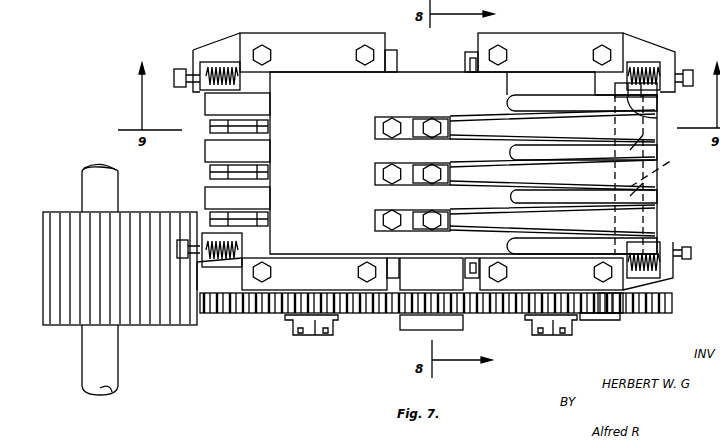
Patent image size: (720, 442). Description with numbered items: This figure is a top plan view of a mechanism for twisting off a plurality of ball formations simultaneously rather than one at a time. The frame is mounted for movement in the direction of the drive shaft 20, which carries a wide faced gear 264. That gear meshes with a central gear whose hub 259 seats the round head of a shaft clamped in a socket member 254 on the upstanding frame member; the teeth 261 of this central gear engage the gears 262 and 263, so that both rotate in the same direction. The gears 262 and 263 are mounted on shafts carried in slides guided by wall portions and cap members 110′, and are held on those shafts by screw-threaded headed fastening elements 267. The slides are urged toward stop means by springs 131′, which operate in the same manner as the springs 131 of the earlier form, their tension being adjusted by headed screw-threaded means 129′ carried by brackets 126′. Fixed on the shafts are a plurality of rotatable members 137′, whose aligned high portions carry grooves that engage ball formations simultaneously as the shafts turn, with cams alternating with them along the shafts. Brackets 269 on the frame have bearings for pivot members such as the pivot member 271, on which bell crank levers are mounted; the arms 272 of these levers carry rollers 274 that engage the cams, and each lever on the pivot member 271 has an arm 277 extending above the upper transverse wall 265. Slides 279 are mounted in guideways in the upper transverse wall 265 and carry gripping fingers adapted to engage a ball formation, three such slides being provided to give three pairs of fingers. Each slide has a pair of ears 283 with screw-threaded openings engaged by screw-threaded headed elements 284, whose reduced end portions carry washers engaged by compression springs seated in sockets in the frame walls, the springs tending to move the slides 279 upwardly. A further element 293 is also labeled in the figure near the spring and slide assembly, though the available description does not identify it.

The drive shaft 20 is at (105, 373).
The cap member 110′ is at (322, 45).
The bracket 126′ is at (228, 50).
The headed screw-threaded means 129′ is at (178, 78).
The spring 131 is at (248, 255).
The spring 131′ is at (226, 84).
The rotatable member 137′ is at (258, 107).
The socket member 254 is at (447, 276).
The hub 259 is at (430, 328).
The teeth 261 is at (190, 305).
The gear 262 is at (590, 305).
The gear 263 is at (360, 303).
The wide faced gear 264 is at (82, 325).
The upper transverse wall 265 is at (418, 86).
The screw-threaded headed fastening element 267 is at (320, 335).
The bracket 269 is at (558, 102).
The pivot member 271 is at (667, 172).
The arm 272 is at (262, 135).
The roller 274 is at (215, 125).
The arm 277 is at (642, 145).
The slide 279 is at (432, 115).
The ear 283 is at (375, 172).
The screw-threaded headed element 284 is at (392, 124).
The connecting member 293 is at (645, 117).